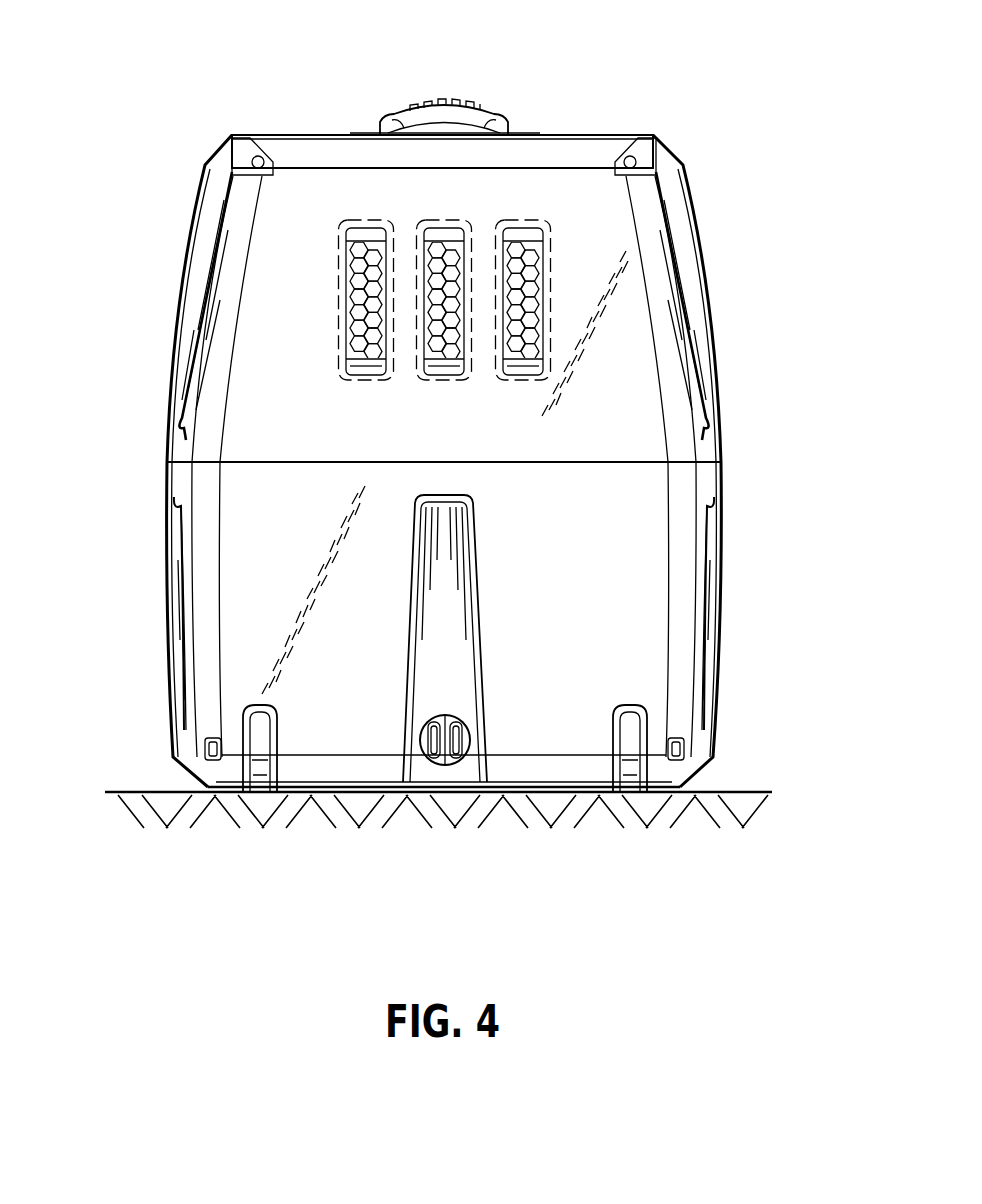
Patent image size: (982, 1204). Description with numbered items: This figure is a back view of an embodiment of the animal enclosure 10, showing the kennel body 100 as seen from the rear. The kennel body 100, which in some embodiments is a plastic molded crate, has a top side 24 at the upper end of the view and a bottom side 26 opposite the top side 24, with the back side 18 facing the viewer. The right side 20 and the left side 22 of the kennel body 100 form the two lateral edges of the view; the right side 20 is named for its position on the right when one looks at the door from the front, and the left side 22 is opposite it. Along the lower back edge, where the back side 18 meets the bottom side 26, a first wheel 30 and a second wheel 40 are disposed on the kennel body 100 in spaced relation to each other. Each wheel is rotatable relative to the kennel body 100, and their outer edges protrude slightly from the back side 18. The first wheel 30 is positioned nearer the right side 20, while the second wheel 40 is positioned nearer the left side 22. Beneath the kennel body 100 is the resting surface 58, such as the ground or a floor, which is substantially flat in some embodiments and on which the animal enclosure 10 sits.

The animal enclosure 10 is at (757, 187).
The back side 18 is at (573, 536).
The right side 20 is at (165, 538).
The left side 22 is at (722, 543).
The top side 24 is at (578, 135).
The bottom side 26 is at (362, 787).
The first wheel 30 is at (260, 793).
The second wheel 40 is at (637, 793).
The resting surface 58 is at (745, 793).
The kennel body 100 is at (168, 398).